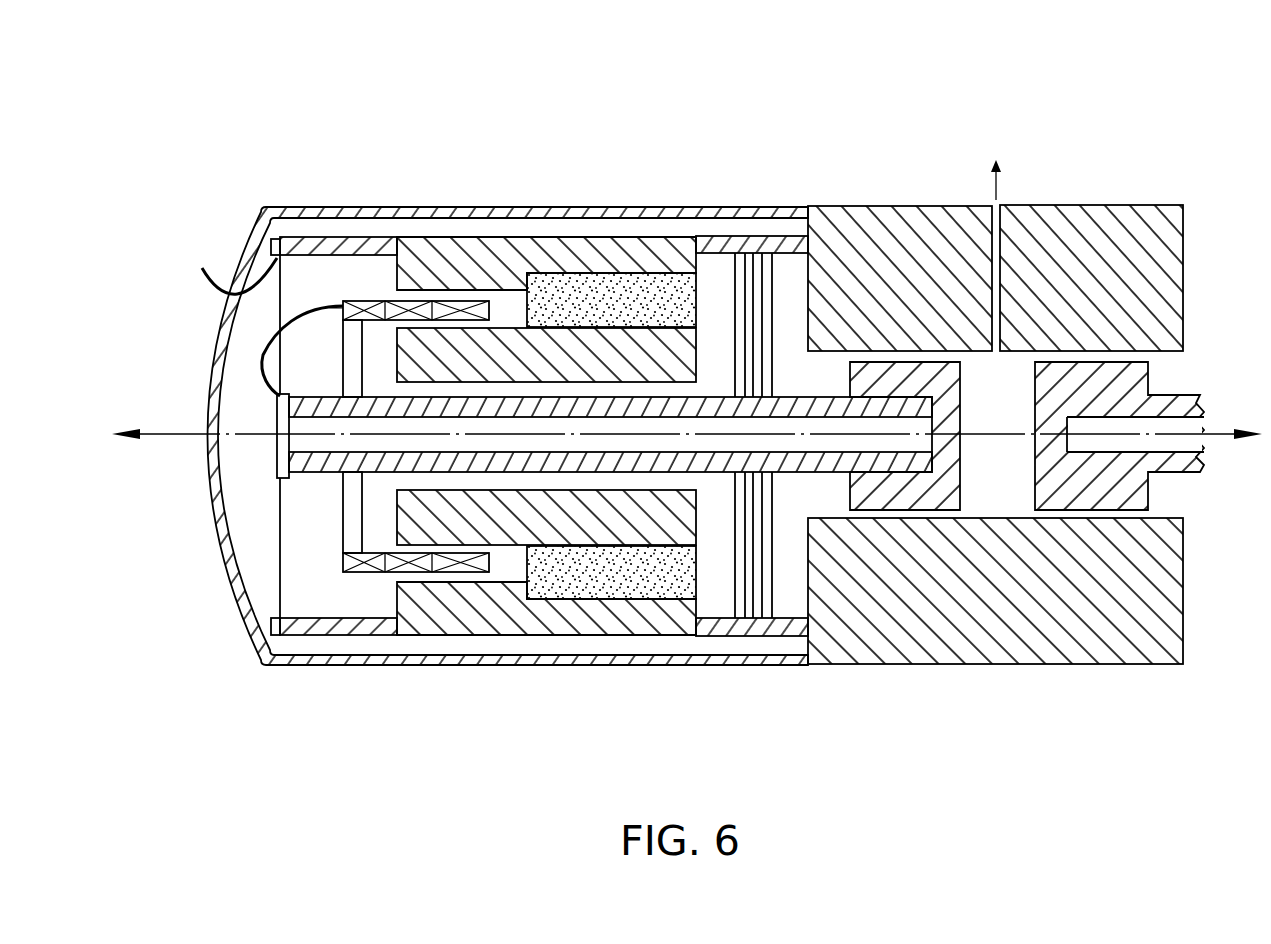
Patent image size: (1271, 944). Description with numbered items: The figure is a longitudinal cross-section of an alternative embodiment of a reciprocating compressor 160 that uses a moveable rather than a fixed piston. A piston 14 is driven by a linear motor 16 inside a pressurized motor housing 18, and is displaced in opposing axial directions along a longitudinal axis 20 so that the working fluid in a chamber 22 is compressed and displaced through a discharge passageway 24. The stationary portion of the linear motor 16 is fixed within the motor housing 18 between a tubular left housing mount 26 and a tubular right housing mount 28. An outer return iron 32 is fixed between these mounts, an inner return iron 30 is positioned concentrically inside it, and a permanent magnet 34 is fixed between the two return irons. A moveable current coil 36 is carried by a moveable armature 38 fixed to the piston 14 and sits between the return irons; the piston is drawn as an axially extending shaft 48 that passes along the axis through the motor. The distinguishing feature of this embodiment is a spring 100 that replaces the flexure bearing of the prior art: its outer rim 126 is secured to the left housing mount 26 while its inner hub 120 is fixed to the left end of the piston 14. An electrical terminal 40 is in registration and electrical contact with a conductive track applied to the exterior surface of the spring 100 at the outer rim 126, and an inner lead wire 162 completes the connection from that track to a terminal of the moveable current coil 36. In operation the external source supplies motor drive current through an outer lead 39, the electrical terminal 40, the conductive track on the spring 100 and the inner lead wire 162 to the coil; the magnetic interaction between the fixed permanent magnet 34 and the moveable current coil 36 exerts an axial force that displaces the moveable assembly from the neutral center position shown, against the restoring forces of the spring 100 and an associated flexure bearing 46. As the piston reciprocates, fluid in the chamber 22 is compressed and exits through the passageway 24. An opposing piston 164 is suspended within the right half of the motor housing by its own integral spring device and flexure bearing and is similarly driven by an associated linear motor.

The reciprocating compressor 160 is at (812, 76).
The piston 14 is at (917, 497).
The linear motor 16 is at (368, 593).
The motor housing 18 is at (602, 666).
The longitudinal axis 20 is at (172, 435).
The chamber 22 is at (988, 380).
The discharge passageway 24 is at (1000, 240).
The left housing mount 26 is at (298, 237).
The right housing mount 28 is at (735, 238).
The inner return iron 30 is at (448, 528).
The outer return iron 32 is at (448, 607).
The permanent magnet 34 is at (582, 287).
The moveable current coil 36 is at (445, 305).
The moveable armature 38 is at (343, 527).
The outer lead 39 is at (210, 280).
The electrical terminal 40 is at (270, 242).
The flexure bearing 46 is at (729, 572).
The shaft 48 is at (550, 478).
The spring 100 is at (277, 537).
The inner hub 120 is at (270, 454).
The outer rim 126 is at (262, 642).
The inner lead wire 162 is at (258, 347).
The opposing piston 164 is at (1115, 497).